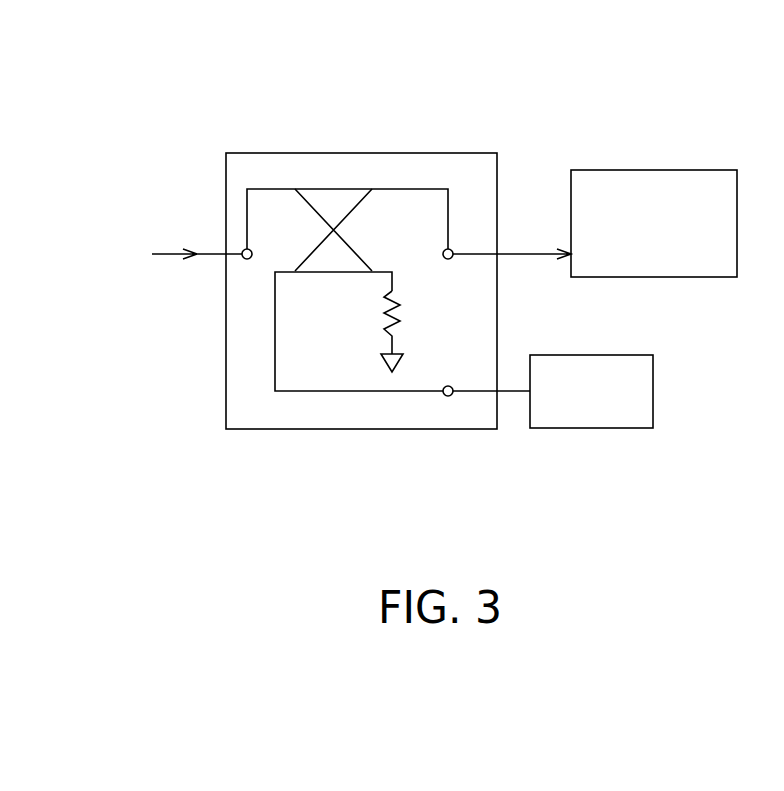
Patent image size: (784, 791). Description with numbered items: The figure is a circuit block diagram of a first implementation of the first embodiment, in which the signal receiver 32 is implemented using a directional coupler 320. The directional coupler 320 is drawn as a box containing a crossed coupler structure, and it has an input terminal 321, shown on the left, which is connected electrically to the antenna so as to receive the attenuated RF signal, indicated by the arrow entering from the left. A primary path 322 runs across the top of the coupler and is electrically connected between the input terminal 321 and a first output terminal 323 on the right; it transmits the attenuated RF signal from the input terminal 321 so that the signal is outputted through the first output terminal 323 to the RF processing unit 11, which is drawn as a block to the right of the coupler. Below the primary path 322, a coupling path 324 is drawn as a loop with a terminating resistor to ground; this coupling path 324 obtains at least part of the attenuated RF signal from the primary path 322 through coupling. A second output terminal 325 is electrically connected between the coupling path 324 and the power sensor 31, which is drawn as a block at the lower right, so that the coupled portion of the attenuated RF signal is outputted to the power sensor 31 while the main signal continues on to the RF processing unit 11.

The signal receiver 32 is at (278, 102).
The directional coupler 320 is at (470, 153).
The input terminal 321 is at (244, 249).
The primary path 322 is at (396, 189).
The first output terminal 323 is at (453, 251).
The coupling path 324 is at (346, 393).
The second output terminal 325 is at (449, 396).
The power sensor 31 is at (597, 355).
The RF processing unit 11 is at (683, 170).